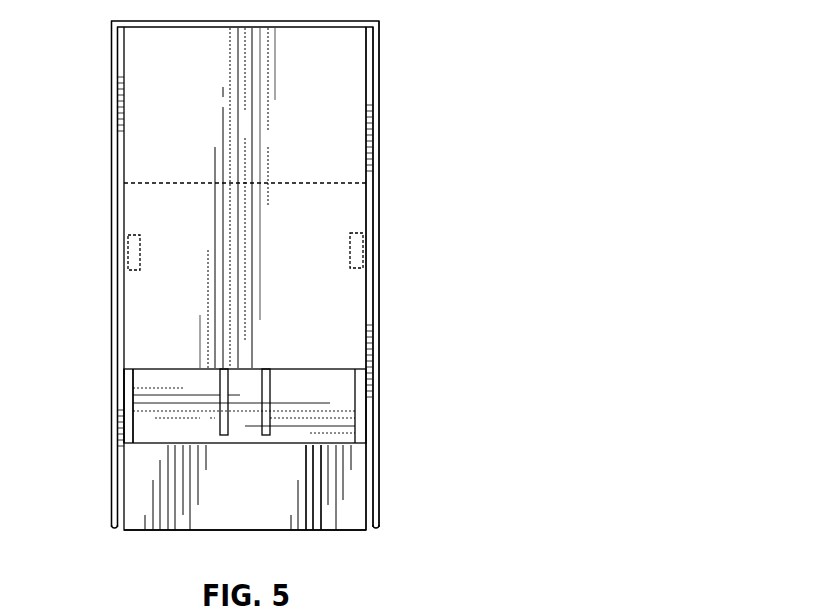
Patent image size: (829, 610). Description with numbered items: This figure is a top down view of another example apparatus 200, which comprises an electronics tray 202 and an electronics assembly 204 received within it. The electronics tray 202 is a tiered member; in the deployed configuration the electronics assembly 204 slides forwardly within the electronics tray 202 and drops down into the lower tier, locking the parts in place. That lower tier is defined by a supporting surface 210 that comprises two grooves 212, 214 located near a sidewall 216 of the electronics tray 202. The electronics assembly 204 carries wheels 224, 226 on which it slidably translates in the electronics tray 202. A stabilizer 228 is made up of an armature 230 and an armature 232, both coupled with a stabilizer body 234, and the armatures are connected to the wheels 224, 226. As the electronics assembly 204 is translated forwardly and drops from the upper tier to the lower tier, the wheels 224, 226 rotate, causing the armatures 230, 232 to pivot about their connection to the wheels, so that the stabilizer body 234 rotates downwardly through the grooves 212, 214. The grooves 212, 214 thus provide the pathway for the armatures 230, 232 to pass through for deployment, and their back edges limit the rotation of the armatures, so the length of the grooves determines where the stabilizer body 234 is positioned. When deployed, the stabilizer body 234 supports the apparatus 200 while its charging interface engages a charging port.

The apparatus 200 is at (432, 88).
The electronics tray 202 is at (379, 265).
The electronics assembly 204 is at (140, 108).
The supporting surface 210 is at (340, 395).
The groove 212 is at (128, 400).
The groove 214 is at (360, 425).
The sidewall 216 is at (379, 470).
The wheel 224 is at (120, 245).
The wheel 226 is at (370, 237).
The stabilizer 228 is at (146, 539).
The armature 230 is at (112, 335).
The armature 232 is at (379, 315).
The stabilizer body 234 is at (330, 518).